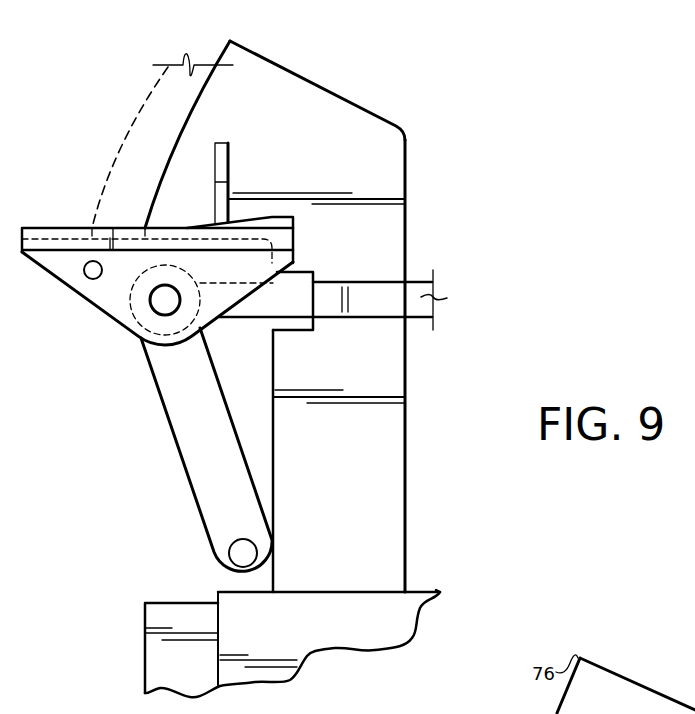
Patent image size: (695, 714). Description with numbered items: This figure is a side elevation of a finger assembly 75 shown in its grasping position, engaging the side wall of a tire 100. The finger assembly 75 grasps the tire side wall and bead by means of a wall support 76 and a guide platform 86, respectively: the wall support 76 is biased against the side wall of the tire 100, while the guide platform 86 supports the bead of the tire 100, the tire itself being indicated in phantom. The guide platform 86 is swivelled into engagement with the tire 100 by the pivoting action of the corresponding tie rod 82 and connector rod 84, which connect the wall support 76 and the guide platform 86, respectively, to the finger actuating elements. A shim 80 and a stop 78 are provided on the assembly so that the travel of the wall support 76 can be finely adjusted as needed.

The finger assembly 75 is at (420, 438).
The wall support 76 is at (230, 41).
The stop 78 is at (229, 158).
The shim 80 is at (275, 217).
The tie rod 82 is at (160, 388).
The connector rod 84 is at (415, 283).
The guide platform 86 is at (58, 228).
The tire 100 is at (143, 104).